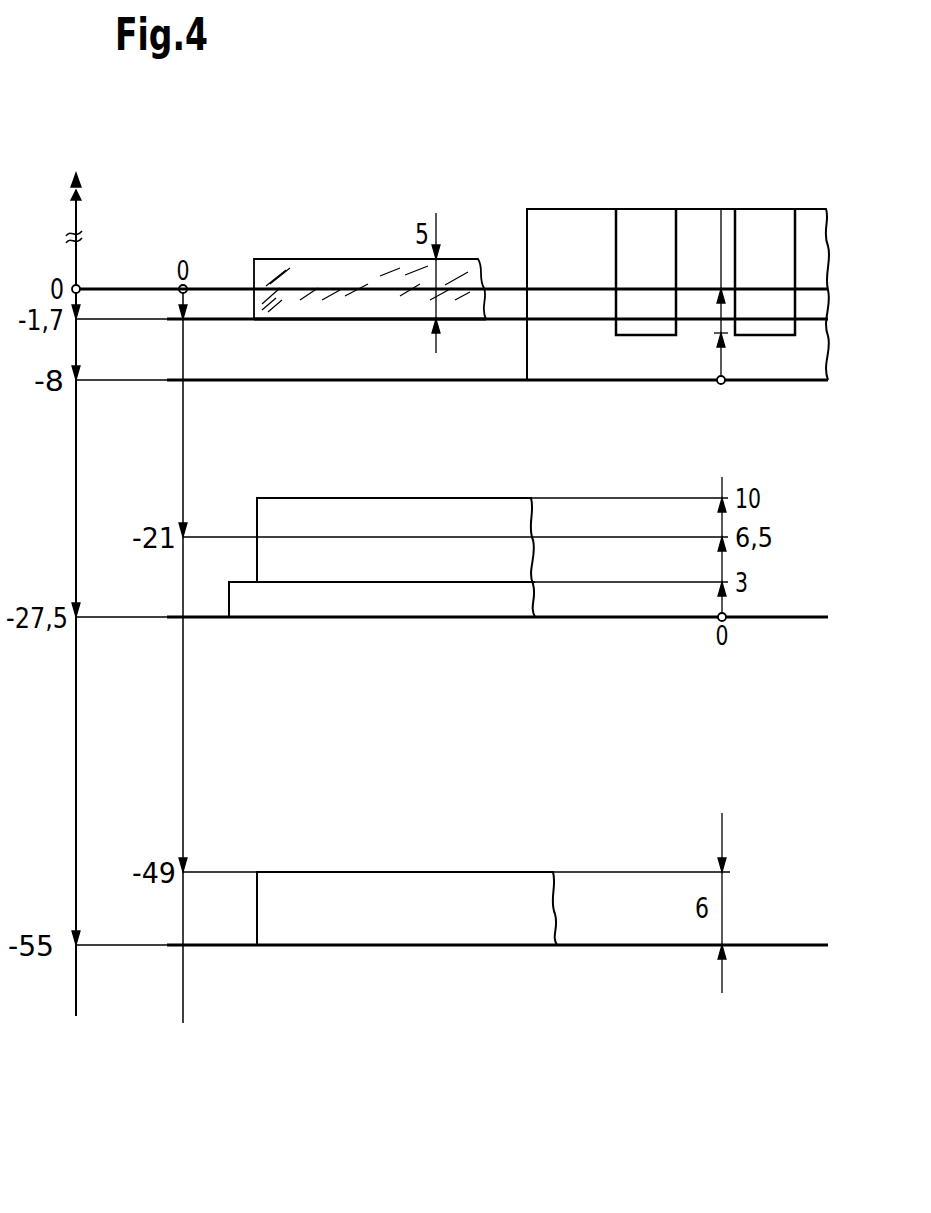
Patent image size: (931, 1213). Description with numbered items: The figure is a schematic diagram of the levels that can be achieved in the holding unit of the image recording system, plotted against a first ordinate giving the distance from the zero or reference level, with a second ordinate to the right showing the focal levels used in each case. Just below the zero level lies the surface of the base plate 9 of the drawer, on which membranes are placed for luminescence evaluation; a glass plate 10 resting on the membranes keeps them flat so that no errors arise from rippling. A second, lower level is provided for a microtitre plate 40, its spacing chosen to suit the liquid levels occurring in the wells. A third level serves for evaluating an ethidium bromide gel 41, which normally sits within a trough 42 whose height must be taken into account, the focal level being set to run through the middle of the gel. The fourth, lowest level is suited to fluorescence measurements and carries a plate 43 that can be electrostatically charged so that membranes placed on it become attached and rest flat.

The base plate 9 is at (325, 322).
The glass plate 10 is at (335, 271).
The microtitre plate 40 is at (560, 222).
The ethidium bromide gel 41 is at (393, 521).
The trough 42 is at (388, 614).
The plate 43 is at (405, 893).